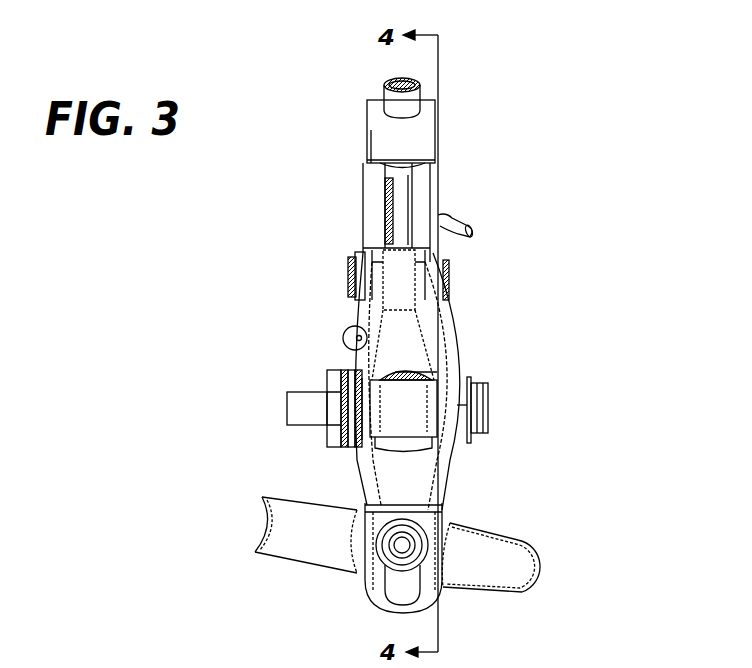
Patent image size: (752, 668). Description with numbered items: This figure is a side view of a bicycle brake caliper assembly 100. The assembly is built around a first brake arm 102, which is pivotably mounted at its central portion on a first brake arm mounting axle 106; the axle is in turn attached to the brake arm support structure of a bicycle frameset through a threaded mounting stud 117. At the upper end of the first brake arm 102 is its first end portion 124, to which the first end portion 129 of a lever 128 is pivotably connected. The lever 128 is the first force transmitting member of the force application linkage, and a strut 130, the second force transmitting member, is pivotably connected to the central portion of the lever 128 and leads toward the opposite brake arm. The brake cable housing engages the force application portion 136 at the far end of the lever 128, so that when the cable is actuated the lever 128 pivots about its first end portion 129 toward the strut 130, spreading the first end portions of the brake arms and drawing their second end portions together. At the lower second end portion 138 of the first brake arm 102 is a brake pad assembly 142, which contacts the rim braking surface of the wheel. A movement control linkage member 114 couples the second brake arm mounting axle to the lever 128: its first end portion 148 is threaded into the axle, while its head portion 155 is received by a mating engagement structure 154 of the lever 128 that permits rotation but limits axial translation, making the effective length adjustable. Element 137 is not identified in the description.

The brake caliper assembly 100 is at (338, 62).
The force application portion 136 is at (388, 167).
The lever 128 is at (400, 190).
The head portion 155 is at (473, 232).
The strut 130 is at (358, 252).
The first end portion of the first brake arm 124 is at (375, 255).
The first end portion of the lever 129 is at (392, 272).
The mating engagement structure 154 is at (443, 252).
The movement control linkage member 114 is at (440, 303).
The bracket 137 is at (343, 335).
The first end portion of the movement control linkage member 148 is at (433, 365).
The first brake arm 102 is at (458, 417).
The mounting stud 117 is at (290, 400).
The first brake arm mounting axle 106 is at (487, 398).
The second end portion of the first brake arm 138 is at (377, 600).
The brake pad assembly 142 is at (533, 548).